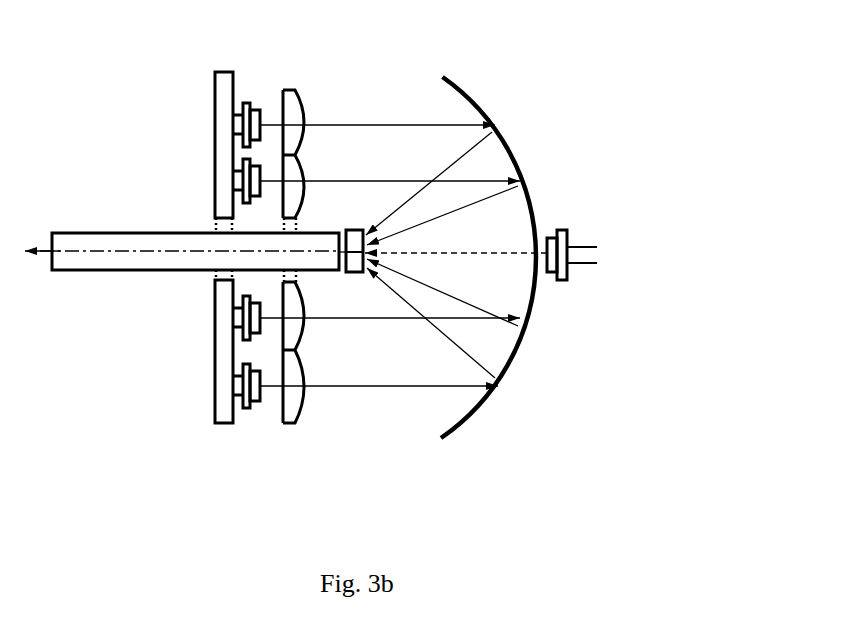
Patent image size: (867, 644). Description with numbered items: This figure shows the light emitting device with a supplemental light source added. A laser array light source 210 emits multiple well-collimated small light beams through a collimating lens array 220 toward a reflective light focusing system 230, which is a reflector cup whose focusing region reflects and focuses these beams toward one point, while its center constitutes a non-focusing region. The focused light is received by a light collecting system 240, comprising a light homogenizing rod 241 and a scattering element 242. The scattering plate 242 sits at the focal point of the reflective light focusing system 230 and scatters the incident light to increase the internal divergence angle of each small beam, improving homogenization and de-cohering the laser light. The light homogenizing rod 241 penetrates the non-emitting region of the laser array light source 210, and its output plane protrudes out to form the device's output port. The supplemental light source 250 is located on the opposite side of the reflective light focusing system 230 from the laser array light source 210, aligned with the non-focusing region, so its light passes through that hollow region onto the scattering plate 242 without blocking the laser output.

The laser array light source 210 is at (228, 72).
The collimating lens array 220 is at (290, 397).
The reflective light focusing system 230 is at (498, 385).
The light collecting system 240 is at (490, 10).
The light homogenizing rod 241 is at (325, 233).
The scattering element 242 is at (360, 230).
The supplemental light source 250 is at (582, 243).